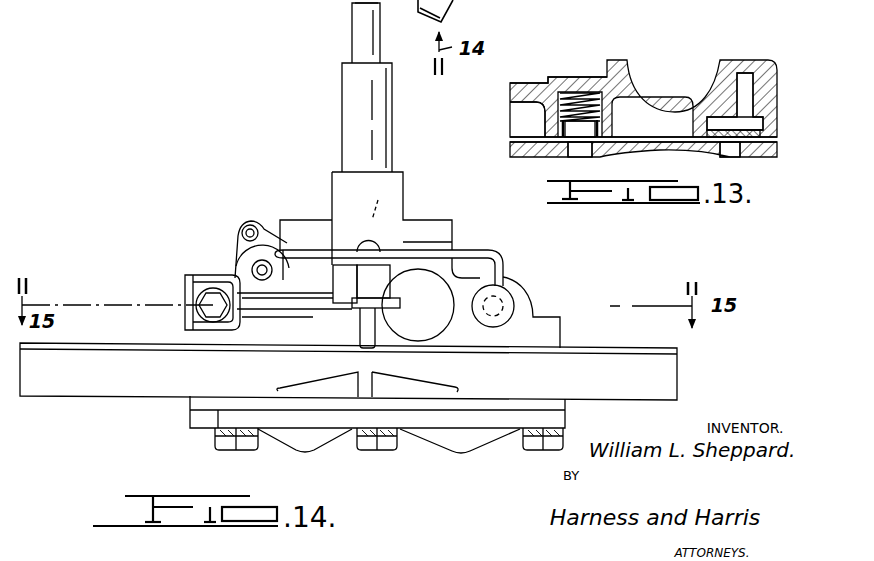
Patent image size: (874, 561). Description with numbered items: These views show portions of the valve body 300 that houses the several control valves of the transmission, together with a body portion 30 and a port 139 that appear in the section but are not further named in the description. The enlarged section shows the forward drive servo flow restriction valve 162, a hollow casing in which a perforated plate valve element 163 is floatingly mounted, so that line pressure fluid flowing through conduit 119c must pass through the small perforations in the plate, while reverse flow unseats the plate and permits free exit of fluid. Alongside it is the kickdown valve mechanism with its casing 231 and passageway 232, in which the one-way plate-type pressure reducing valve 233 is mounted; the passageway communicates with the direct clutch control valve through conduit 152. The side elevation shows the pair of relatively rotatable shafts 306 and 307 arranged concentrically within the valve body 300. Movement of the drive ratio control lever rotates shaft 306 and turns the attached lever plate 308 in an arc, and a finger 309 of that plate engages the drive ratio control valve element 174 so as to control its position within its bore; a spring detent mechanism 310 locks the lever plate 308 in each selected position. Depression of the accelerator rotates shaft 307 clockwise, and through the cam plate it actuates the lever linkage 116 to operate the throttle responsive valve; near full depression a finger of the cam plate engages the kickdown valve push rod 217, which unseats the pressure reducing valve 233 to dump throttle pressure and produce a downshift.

In FIG. 13, the valve body 30 is at (730, 60).
In FIG. 13, the conduit 152 is at (545, 82).
In FIG. 13, the casing 231 is at (577, 91).
In FIG. 13, the passageway 232 is at (582, 146).
In FIG. 13, the pressure reducing valve 233 is at (568, 152).
In FIG. 13, the conduit 119c is at (745, 80).
In FIG. 13, the restriction valve 162 is at (762, 127).
In FIG. 13, the perforated plate valve element 163 is at (713, 147).
In FIG. 13, the port 139 is at (742, 157).
In FIG. 14, the shaft 307 is at (362, 30).
In FIG. 14, the shaft 306 is at (358, 108).
In FIG. 14, the spring detent mechanism 310 is at (404, 204).
In FIG. 14, the lever plate 308 is at (478, 252).
In FIG. 14, the finger 309 is at (503, 299).
In FIG. 14, the drive ratio control valve element 174 is at (508, 314).
In FIG. 14, the kickdown valve push rod 217 is at (256, 265).
In FIG. 14, the linkage 116 is at (183, 277).
In FIG. 14, the valve body 300 is at (173, 400).